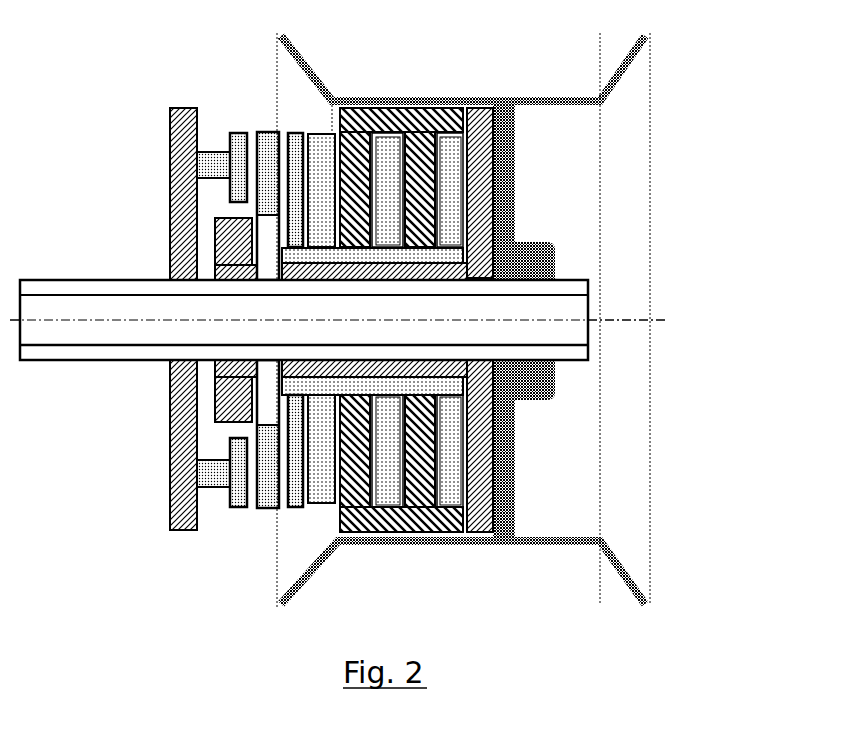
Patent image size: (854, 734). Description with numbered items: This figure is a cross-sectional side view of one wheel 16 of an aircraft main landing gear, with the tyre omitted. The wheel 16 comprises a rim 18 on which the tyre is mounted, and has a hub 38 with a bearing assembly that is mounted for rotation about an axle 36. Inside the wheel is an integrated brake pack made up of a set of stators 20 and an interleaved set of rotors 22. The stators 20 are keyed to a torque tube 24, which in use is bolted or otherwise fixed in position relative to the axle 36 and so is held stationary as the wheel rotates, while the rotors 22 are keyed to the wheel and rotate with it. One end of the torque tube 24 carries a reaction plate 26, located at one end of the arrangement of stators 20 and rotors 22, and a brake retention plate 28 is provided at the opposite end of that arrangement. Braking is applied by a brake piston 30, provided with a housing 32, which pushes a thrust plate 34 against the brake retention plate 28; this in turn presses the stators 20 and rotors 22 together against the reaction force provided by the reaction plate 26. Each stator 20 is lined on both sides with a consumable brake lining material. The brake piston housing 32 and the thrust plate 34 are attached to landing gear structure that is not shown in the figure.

The wheel 16 is at (686, 272).
The rim 18 is at (326, 58).
The stators 20 is at (385, 148).
The rotors 22 is at (428, 148).
The torque tube 24 is at (452, 268).
The reaction plate 26 is at (480, 452).
The brake retention plate 28 is at (295, 133).
The brake piston 30 is at (213, 157).
The brake piston housing 32 is at (169, 530).
The thrust plate 34 is at (270, 508).
The axle 36 is at (60, 279).
The hub 38 is at (550, 262).